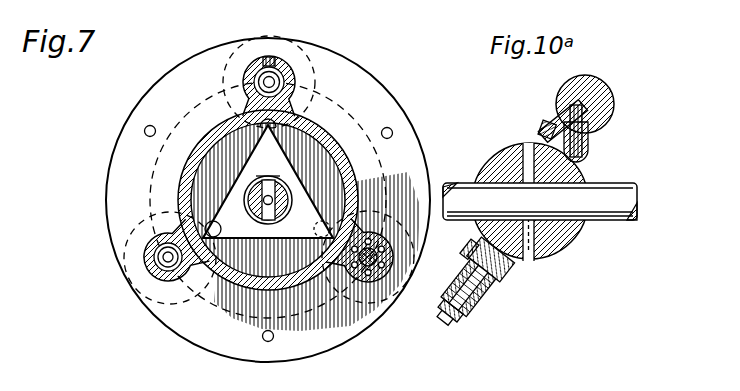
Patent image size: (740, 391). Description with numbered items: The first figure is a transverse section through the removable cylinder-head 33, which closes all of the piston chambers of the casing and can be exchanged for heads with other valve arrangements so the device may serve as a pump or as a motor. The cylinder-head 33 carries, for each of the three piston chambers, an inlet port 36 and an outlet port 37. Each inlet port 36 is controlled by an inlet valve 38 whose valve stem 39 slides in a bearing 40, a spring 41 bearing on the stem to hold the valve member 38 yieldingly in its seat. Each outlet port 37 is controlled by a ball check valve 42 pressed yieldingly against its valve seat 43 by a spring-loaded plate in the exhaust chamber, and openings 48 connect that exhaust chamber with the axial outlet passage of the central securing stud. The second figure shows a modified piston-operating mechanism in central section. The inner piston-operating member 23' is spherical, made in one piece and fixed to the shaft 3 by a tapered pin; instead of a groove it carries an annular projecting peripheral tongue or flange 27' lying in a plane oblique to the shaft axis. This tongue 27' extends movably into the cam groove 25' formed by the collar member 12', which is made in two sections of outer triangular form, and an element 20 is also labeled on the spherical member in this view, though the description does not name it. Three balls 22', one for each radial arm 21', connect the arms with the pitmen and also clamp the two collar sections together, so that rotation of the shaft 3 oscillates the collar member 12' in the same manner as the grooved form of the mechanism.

In FIG. 7, the cylinder-head 33 is at (372, 97).
In FIG. 7, the inlet port 36 is at (312, 98).
In FIG. 7, the outlet port 37 is at (218, 124).
In FIG. 7, the inlet valve 38 is at (278, 76).
In FIG. 7, the valve stem 39 is at (296, 84).
In FIG. 7, the bearing 40 is at (299, 240).
In FIG. 7, the spring 41 is at (254, 82).
In FIG. 7, the ball check valve 42 is at (314, 141).
In FIG. 7, the valve seat 43 is at (250, 215).
In FIG. 7, the openings 48 is at (290, 173).
In FIG. 10A, the shaft 3 is at (612, 205).
In FIG. 10A, the slot 20 is at (524, 148).
In FIG. 10A, the inner piston-operating member 23' is at (536, 215).
In FIG. 10A, the balls 22' is at (603, 104).
In FIG. 10A, the annular projecting peripheral tongue or flange 27' is at (557, 99).
In FIG. 10A, the radial arms 21' is at (602, 131).
In FIG. 10A, the cam groove 25' is at (599, 149).
In FIG. 10A, the collar member 12' is at (537, 184).